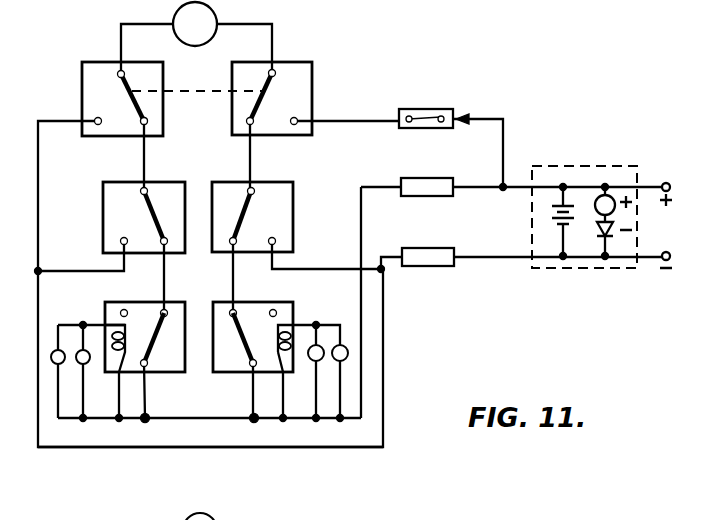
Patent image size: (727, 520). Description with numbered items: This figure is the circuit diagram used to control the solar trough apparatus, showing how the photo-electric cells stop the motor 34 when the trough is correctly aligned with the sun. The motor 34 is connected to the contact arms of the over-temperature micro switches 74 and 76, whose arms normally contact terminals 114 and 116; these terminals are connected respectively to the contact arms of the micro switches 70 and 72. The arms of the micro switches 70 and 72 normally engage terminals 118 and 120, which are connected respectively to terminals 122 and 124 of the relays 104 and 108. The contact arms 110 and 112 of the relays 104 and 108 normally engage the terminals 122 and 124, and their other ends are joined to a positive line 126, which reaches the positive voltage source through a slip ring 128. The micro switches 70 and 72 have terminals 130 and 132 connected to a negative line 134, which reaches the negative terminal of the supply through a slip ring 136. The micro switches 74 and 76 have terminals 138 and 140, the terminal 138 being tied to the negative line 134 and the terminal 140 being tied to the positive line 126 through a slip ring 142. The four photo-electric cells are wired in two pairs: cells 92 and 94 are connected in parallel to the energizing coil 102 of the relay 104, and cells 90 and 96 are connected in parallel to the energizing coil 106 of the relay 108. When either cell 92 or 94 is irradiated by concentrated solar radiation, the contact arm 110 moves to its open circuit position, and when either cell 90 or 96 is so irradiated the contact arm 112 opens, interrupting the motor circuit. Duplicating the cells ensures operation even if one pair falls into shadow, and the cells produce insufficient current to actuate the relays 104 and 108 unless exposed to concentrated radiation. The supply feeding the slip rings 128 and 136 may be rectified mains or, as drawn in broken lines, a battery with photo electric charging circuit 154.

The motor 34 is at (217, 15).
The over-temperature micro switch 74 is at (90, 78).
The over-temperature micro switch 76 is at (295, 80).
The terminal 138 is at (96, 118).
The terminal 114 is at (148, 121).
The terminal 116 is at (247, 125).
The terminal 140 is at (298, 119).
The slip ring 142 is at (449, 109).
The slip ring 128 is at (432, 179).
The slip ring 136 is at (443, 248).
The battery with photo electric charging circuit 154 is at (598, 268).
The micro switch 70 is at (113, 184).
The micro switch 72 is at (278, 186).
The terminal 130 is at (120, 240).
The terminal 132 is at (276, 241).
The terminal 118 is at (167, 246).
The terminal 120 is at (237, 247).
The terminal 122 is at (160, 312).
The relay 104 is at (156, 307).
The relay 108 is at (295, 310).
The terminal 124 is at (230, 318).
The contact arm 110 is at (158, 352).
The contact arm 112 is at (236, 340).
The energizing coil 102 is at (123, 355).
The energizing coil 106 is at (275, 356).
The photo-electric cell 94 is at (54, 364).
The photo-electric cell 92 is at (86, 364).
The photo-electric cell 90 is at (322, 347).
The photo-electric cell 96 is at (348, 353).
The positive line 126 is at (293, 419).
The negative line 134 is at (355, 447).